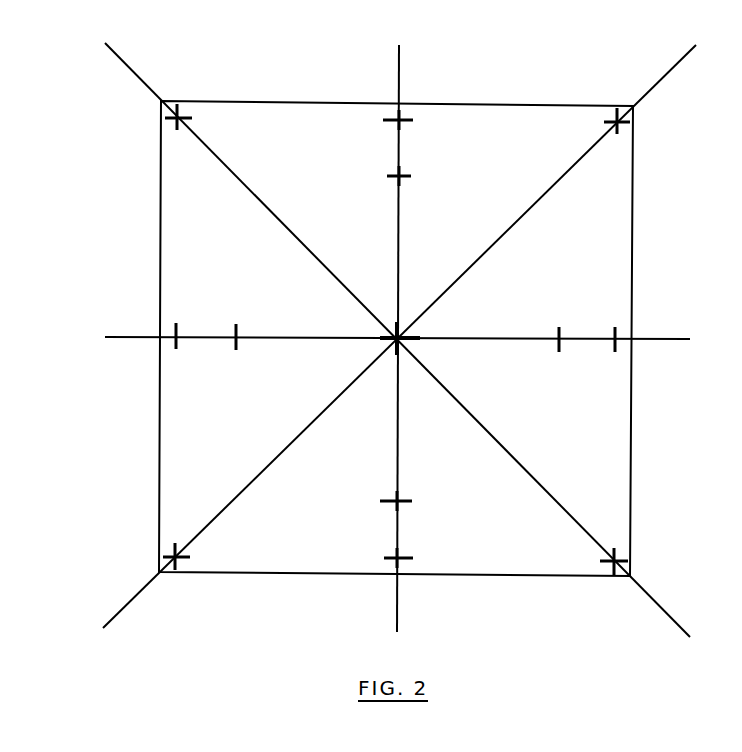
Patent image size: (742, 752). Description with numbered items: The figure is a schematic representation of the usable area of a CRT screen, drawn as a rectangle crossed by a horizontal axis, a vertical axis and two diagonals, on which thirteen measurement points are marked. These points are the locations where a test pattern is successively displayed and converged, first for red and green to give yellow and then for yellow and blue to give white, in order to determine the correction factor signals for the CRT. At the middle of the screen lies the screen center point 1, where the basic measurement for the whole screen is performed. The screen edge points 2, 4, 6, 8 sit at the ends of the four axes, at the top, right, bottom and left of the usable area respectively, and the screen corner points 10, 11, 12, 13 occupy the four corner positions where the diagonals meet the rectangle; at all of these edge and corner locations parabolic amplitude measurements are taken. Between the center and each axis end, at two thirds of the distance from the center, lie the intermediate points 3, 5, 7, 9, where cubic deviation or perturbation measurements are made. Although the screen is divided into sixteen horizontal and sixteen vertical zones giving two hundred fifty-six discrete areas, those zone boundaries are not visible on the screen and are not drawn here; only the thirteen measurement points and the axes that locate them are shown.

The screen center point 1 is at (410, 340).
The screen edge point 2 is at (401, 113).
The intermediate point 3 is at (404, 169).
The screen edge point 4 is at (617, 345).
The intermediate point 5 is at (566, 344).
The screen edge point 6 is at (406, 563).
The intermediate point 7 is at (402, 507).
The screen edge point 8 is at (178, 341).
The intermediate point 9 is at (238, 343).
The screen corner point 10 is at (633, 126).
The screen corner point 11 is at (610, 563).
The screen corner point 12 is at (177, 572).
The screen corner point 13 is at (162, 125).